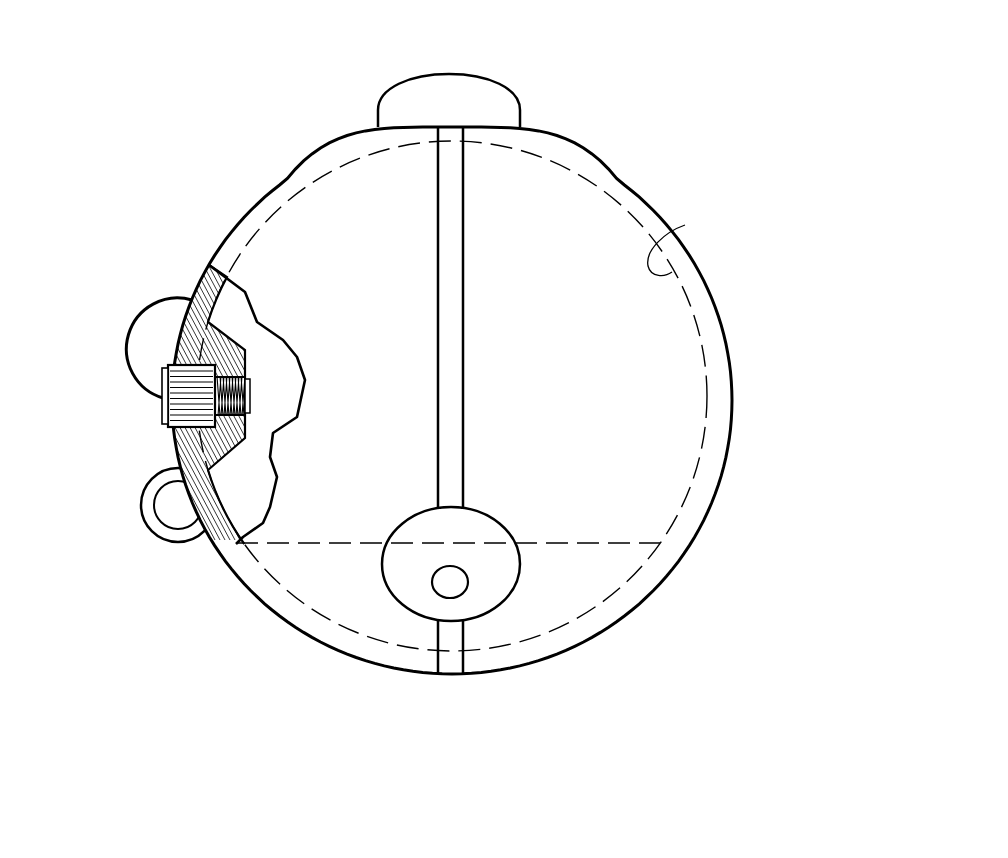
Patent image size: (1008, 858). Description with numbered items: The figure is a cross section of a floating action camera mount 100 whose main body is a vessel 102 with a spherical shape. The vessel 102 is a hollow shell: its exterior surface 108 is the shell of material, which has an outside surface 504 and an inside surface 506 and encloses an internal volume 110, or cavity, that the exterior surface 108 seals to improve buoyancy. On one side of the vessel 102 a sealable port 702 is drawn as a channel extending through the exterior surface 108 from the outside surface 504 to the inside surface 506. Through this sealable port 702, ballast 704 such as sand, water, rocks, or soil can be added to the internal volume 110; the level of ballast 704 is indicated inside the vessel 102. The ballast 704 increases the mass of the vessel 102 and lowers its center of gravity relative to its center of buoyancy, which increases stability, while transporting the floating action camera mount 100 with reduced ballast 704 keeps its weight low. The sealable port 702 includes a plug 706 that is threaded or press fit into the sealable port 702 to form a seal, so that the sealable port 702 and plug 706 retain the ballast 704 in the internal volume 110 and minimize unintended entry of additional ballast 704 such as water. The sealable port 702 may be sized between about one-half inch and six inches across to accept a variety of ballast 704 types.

The floating action camera mount 100 is at (142, 47).
The vessel 102 is at (780, 67).
The exterior surface 108 is at (601, 162).
The internal volume 110 is at (635, 340).
The outside surface 504 is at (652, 212).
The inside surface 506 is at (685, 225).
The sealable port 702 is at (250, 382).
The ballast 704 is at (570, 543).
The plug 706 is at (163, 412).